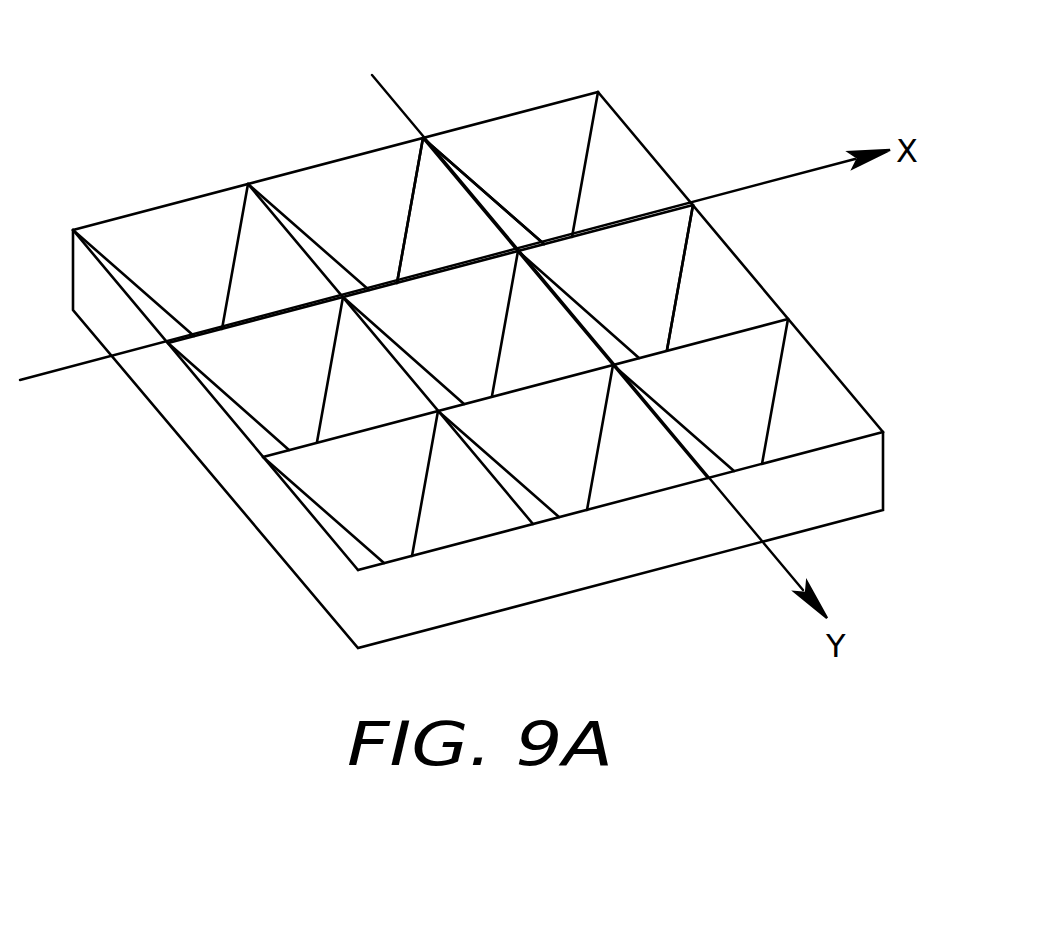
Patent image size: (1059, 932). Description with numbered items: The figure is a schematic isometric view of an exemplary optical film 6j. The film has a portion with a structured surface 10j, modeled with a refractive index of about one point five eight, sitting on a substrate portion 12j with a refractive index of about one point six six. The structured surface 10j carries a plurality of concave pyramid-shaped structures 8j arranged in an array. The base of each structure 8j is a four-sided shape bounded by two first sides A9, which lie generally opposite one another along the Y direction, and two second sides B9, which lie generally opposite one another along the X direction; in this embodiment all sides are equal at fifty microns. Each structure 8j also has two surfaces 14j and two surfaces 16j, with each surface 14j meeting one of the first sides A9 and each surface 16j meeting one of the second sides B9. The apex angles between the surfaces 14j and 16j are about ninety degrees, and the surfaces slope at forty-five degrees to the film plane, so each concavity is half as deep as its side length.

The optical film 6j is at (466, 328).
The concave pyramid-shaped structure 8j is at (573, 107).
The structured surface 10j is at (290, 402).
The substrate portion 12j is at (651, 548).
The surface 14j is at (498, 165).
The surface 16j is at (717, 278).
The first side A9 is at (537, 107).
The second side B9 is at (637, 132).